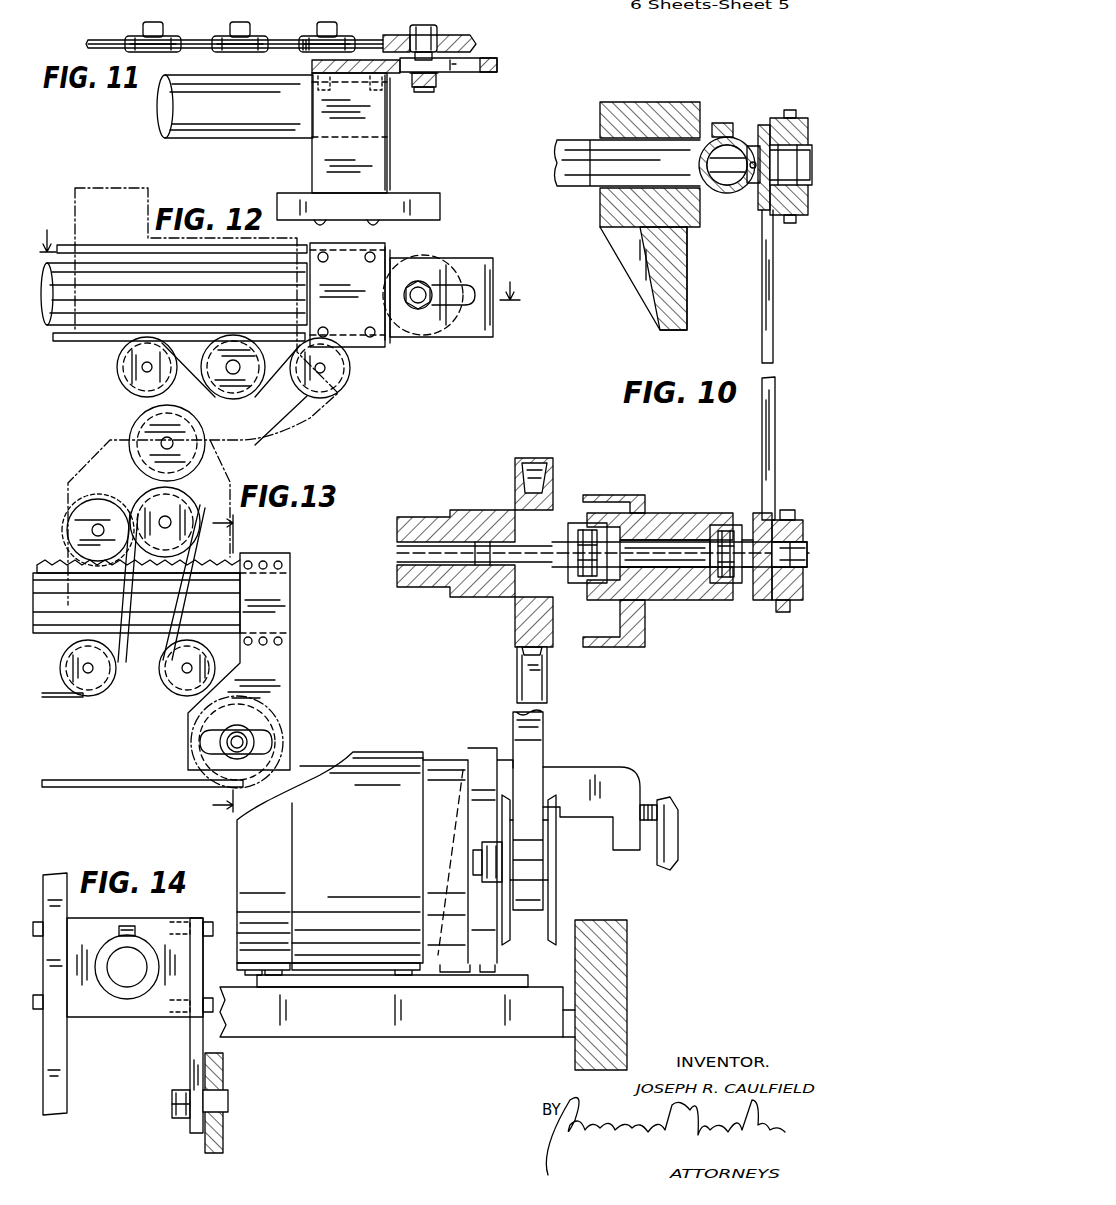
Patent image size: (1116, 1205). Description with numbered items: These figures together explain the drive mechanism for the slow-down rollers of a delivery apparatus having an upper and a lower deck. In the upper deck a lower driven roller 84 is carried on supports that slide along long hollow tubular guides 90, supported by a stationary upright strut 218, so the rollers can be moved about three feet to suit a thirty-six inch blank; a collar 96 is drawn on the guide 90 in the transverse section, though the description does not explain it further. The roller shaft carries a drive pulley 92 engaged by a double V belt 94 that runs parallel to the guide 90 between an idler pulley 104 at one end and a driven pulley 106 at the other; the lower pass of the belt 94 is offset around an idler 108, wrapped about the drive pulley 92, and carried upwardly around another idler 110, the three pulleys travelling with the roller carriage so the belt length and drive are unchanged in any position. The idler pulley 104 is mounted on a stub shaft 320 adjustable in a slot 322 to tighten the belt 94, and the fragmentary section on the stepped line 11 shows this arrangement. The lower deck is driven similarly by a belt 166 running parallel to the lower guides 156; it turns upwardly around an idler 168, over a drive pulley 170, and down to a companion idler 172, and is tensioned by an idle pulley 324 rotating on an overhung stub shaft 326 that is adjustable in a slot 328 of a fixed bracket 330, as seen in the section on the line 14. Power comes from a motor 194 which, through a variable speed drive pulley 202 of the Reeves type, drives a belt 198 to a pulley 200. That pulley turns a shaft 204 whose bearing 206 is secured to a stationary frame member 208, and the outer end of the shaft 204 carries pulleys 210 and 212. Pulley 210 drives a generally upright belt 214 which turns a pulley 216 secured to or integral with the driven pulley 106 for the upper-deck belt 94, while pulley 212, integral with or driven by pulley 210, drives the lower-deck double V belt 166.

In FIG. 12, the lower driven roller 84 is at (270, 432).
In FIG. 11, the hollow tubular guides 90 is at (232, 136).
In FIG. 12, the hollow tubular guides 90 is at (226, 301).
In FIG. 10, the hollow tubular guides 90 is at (730, 200).
In FIG. 11, the drive pulley 92 is at (255, 34).
In FIG. 12, the drive pulley 92 is at (252, 352).
In FIG. 12, the belt 94 is at (98, 247).
In FIG. 10, the belt 94 is at (775, 220).
In FIG. 10, the collar 96 is at (735, 124).
In FIG. 11, the idler pulley 104 is at (447, 31).
In FIG. 12, the idler pulley 104 is at (420, 256).
In FIG. 10, the driven pulley 106 is at (793, 118).
In FIG. 11, the idler 108 is at (168, 33).
In FIG. 12, the idler 108 is at (125, 385).
In FIG. 11, the idler 110 is at (343, 35).
In FIG. 12, the idler 110 is at (333, 392).
In FIG. 13, the guides 156 is at (147, 627).
In FIG. 14, the guides 156 is at (128, 993).
In FIG. 13, the belt 166 is at (66, 780).
In FIG. 10, the belt 166 is at (787, 512).
In FIG. 13, the idler 168 is at (62, 662).
In FIG. 13, the drive pulley 170 is at (187, 507).
In FIG. 13, the companion idler 172 is at (175, 690).
In FIG. 10, the motor 194 is at (395, 758).
In FIG. 10, the belt 198 is at (540, 684).
In FIG. 10, the pulley 200 is at (548, 468).
In FIG. 10, the variable speed drive pulley 202 is at (555, 893).
In FIG. 10, the shaft 204 is at (690, 565).
In FIG. 10, the bearing 206 is at (672, 510).
In FIG. 10, the stationary frame member 208 is at (623, 647).
In FIG. 10, the pulley 210 is at (760, 600).
In FIG. 10, the pulley 212 is at (788, 612).
In FIG. 10, the belt 214 is at (775, 420).
In FIG. 10, the pulley 216 is at (762, 125).
In FIG. 10, the stationary upright strut 218 is at (686, 300).
In FIG. 11, the stub shaft 320 is at (426, 93).
In FIG. 12, the stub shaft 320 is at (418, 310).
In FIG. 11, the slot 322 is at (472, 72).
In FIG. 12, the slot 322 is at (470, 336).
In FIG. 13, the idle pulley 324 is at (284, 727).
In FIG. 14, the idle pulley 324 is at (223, 1080).
In FIG. 13, the overhung stub shaft 326 is at (238, 755).
In FIG. 13, the slot 328 is at (202, 743).
In FIG. 13, the fixed bracket 330 is at (275, 692).
In FIG. 14, the fixed bracket 330 is at (190, 1036).
In FIG. 12, the section line 11 is at (283, 254).
In FIG. 13, the section line 14 is at (235, 666).